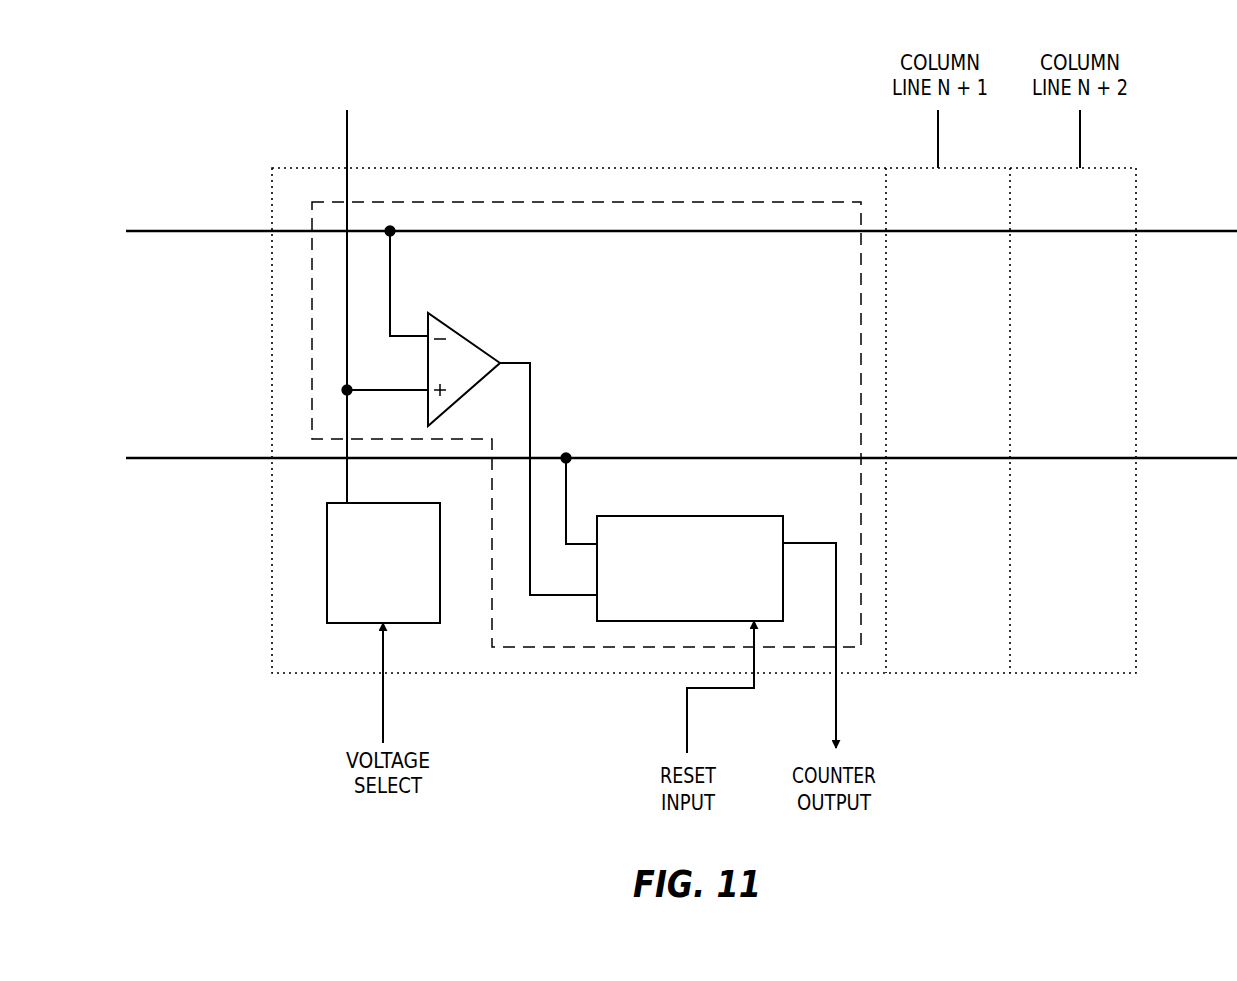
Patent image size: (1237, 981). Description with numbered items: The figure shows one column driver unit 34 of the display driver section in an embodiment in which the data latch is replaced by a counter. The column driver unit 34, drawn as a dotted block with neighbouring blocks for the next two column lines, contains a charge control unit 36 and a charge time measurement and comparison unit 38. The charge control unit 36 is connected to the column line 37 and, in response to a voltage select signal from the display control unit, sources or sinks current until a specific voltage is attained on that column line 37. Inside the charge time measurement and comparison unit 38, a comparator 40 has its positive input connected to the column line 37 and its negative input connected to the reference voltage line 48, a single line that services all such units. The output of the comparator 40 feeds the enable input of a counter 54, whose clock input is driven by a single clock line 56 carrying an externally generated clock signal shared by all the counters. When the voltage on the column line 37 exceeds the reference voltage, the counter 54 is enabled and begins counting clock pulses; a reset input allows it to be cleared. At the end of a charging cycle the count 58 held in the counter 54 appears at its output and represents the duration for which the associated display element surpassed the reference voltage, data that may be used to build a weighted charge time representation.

The column driver unit 34 is at (295, 167).
The charge control unit 36 is at (327, 597).
The column line 37 is at (348, 130).
The charge time measurement and comparison unit 38 is at (667, 200).
The comparator 40 is at (465, 334).
The reference voltage line 48 is at (163, 233).
The counter 54 is at (721, 516).
The clock line 56 is at (160, 460).
The count 58 is at (817, 543).